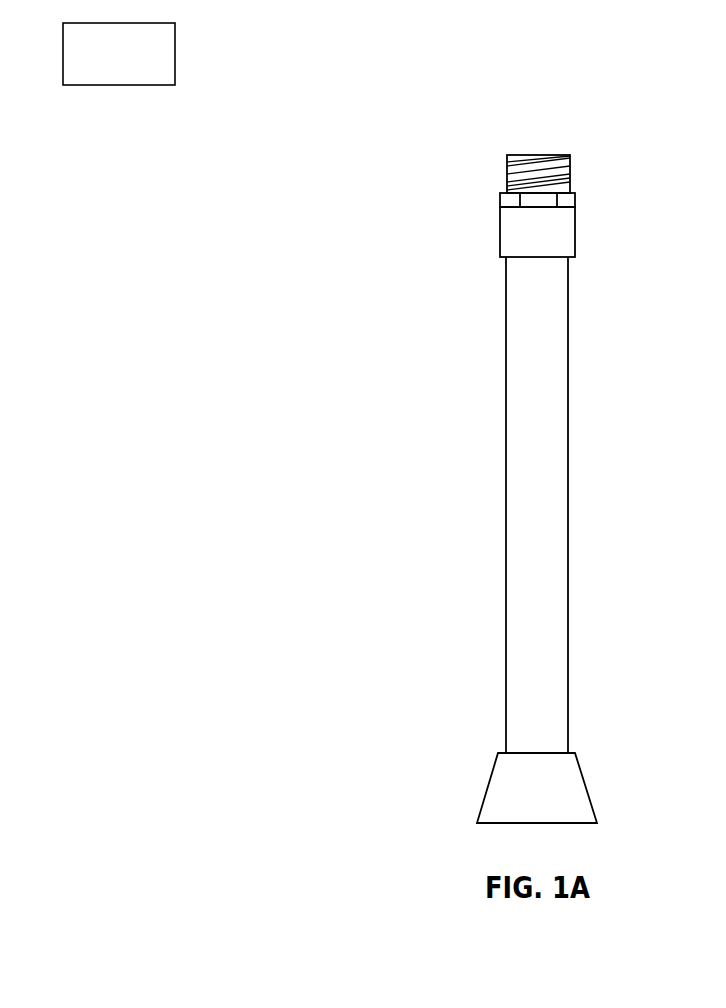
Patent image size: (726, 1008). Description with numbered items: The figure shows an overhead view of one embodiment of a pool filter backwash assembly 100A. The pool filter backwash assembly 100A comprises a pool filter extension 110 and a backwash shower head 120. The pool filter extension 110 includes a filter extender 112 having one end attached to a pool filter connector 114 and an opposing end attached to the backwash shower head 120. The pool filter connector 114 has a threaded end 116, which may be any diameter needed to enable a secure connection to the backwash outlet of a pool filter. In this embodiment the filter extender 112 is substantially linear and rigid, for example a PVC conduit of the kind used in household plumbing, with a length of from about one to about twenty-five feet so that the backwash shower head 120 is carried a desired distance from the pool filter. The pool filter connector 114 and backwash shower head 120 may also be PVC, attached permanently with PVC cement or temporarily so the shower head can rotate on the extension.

The pool filter backwash assembly 100A is at (197, 135).
The pool filter extension 110 is at (515, 433).
The filter extender 112 is at (568, 462).
The pool filter connector 114 is at (576, 232).
The threaded end 116 is at (572, 170).
The backwash shower head 120 is at (472, 788).